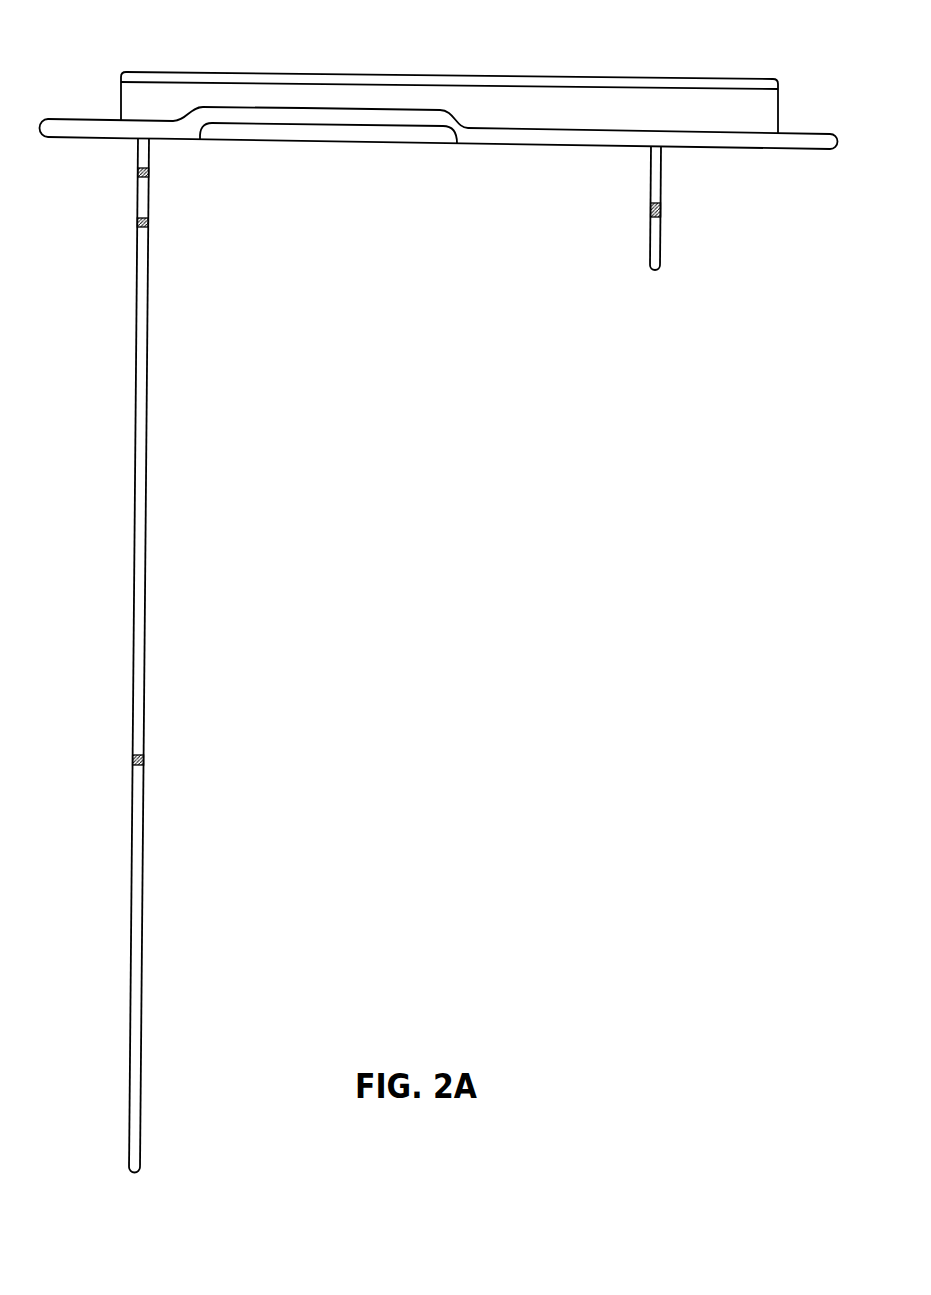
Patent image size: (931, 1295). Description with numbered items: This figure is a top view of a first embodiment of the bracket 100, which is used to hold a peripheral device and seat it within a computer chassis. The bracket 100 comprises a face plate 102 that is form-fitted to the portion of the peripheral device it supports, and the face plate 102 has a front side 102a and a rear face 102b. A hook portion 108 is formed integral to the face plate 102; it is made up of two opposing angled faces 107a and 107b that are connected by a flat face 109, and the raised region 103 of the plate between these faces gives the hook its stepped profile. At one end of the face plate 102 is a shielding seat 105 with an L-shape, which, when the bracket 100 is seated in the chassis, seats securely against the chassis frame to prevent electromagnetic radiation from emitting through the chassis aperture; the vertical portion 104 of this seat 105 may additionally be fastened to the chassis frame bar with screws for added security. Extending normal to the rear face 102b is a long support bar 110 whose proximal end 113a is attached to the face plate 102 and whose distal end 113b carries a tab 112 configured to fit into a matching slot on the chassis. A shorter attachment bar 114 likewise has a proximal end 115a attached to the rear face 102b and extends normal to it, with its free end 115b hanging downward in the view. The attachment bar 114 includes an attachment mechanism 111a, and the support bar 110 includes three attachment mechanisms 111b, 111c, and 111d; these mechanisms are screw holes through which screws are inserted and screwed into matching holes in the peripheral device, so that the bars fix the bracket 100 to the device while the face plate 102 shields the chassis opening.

The bracket 100 is at (108, 26).
The face plate 102 is at (803, 142).
The first bend of horizontal arm 102a is at (148, 120).
The rear face 102b is at (169, 152).
The raised section 103 is at (414, 111).
The vertical portion 104 is at (530, 76).
The shielding seat 105 is at (780, 122).
The angled face 107a is at (455, 143).
The angled face 107b is at (207, 130).
The hook portion 108 is at (305, 101).
The flat face 109 is at (332, 121).
The support bar 110 is at (142, 973).
The attachment mechanism 111a is at (650, 212).
The attachment mechanism 111b is at (137, 173).
The attachment mechanism 111c is at (137, 222).
The attachment mechanism 111d is at (132, 762).
The tab 112 is at (139, 1168).
The proximal end 113a is at (115, 149).
The distal end 113b is at (106, 1158).
The attachment bar 114 is at (648, 263).
The proximal end 115a is at (675, 162).
The lower portion of short leg 115b is at (694, 270).